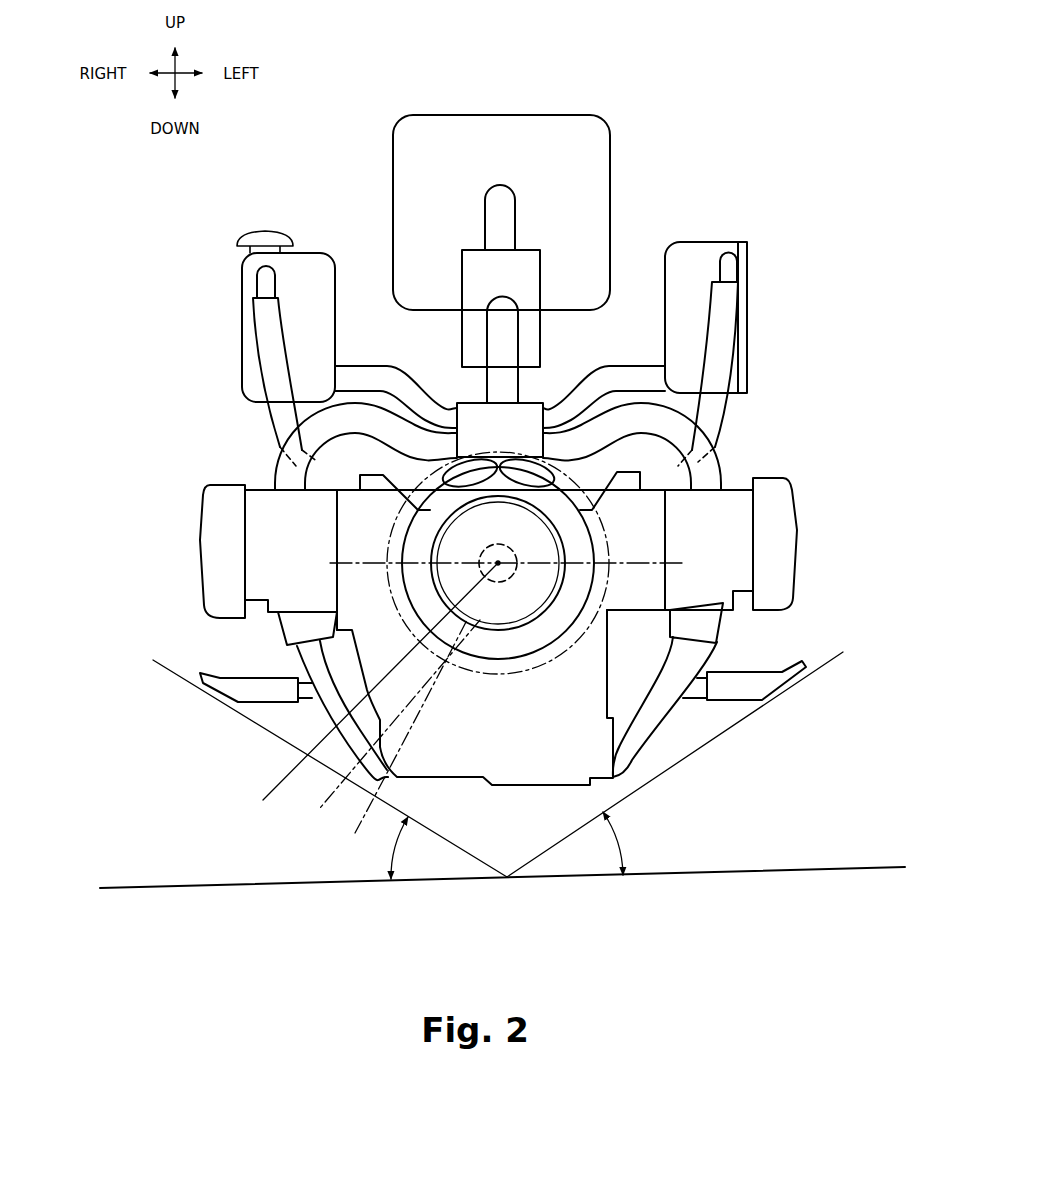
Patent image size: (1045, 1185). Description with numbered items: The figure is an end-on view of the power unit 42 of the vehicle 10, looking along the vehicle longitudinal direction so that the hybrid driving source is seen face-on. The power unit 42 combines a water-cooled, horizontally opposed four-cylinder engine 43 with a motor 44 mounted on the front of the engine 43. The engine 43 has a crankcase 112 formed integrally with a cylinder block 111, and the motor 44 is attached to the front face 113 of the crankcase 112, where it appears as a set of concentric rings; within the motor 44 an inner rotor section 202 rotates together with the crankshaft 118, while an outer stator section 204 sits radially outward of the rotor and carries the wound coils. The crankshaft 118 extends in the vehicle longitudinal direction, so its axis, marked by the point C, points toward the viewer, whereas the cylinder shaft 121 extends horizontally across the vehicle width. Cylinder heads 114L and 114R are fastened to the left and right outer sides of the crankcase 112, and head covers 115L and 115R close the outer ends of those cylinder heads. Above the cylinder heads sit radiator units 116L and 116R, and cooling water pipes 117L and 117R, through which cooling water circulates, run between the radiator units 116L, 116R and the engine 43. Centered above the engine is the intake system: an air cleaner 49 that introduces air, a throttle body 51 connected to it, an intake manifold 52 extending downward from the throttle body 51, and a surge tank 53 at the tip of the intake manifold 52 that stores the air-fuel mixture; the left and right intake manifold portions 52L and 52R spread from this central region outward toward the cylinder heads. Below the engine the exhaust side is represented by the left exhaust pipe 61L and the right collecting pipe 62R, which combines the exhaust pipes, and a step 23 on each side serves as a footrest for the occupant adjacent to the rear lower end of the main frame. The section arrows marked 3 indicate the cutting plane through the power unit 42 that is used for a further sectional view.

The inverted pendulum type vehicle 10 is at (733, 105).
The step 23 is at (243, 687).
The power unit 42 is at (797, 330).
The horizontal opposed 4-cylinder engine 43 is at (793, 413).
The motor 44 is at (462, 677).
The air cleaner 49 is at (478, 140).
The throttle body 51 is at (470, 225).
The intake manifold 52 is at (497, 342).
The surge tank 53 is at (523, 415).
The intake manifold (right) 52R is at (287, 472).
The intake manifold (left) 52L is at (733, 400).
The exhaust pipe (left) 61L is at (653, 713).
The collecting pipe (right) 62R is at (347, 718).
The cylinder block 111 is at (503, 642).
The crankcase 112 is at (565, 737).
The front face of the crankcase 113 is at (510, 730).
The cylinder head (right) 114R is at (260, 515).
The cylinder head (left) 114L is at (732, 503).
The head cover (right) 115R is at (218, 518).
The head cover (left) 115L is at (775, 497).
The radiator unit (right) 116R is at (300, 280).
The radiator unit (left) 116L is at (690, 262).
The cooling water pipe (right) 117R is at (353, 378).
The cooling water pipe (left) 117L is at (627, 385).
The crankshaft 118 is at (482, 555).
The cylinder shaft 121 is at (678, 560).
The inner rotor section 202 is at (396, 740).
The outer stator section 204 is at (377, 727).
The wheel center C is at (369, 690).
The section line 3- 3 is at (133, 600).